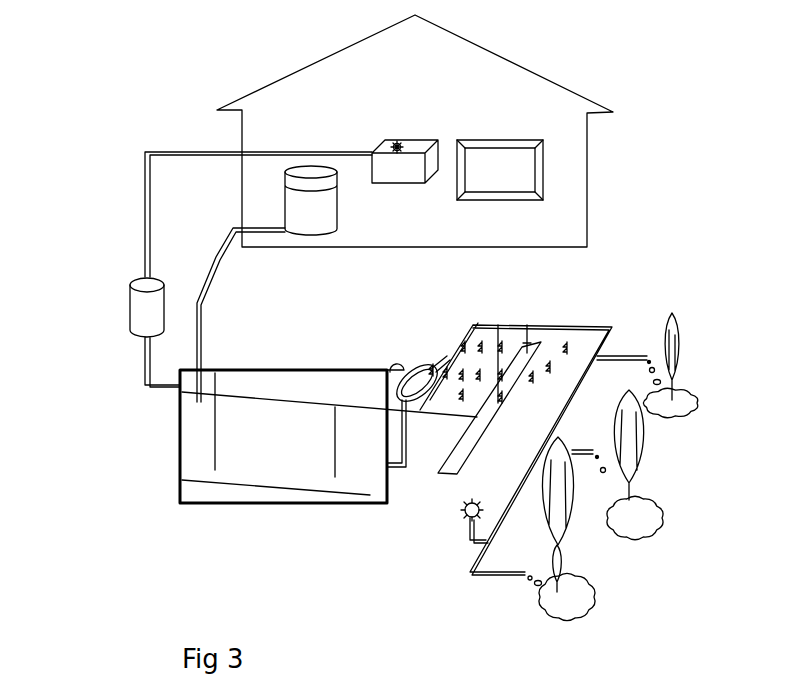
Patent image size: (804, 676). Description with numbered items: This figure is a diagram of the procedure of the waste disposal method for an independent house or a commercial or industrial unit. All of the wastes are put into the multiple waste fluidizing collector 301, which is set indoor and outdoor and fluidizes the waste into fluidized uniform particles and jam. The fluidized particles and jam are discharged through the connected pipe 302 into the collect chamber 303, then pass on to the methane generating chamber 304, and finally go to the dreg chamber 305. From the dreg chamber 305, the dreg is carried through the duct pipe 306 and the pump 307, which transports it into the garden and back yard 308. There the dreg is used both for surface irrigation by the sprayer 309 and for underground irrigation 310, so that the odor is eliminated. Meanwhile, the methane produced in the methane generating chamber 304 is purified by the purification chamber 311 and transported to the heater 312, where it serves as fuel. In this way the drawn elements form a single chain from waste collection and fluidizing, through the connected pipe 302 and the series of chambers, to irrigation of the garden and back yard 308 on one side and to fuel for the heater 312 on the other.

The multiple waste fluidizing collector 301 is at (320, 223).
The connected pipe 302 is at (217, 258).
The collect chamber 303 is at (197, 415).
The methane generating chamber 304 is at (300, 462).
The dreg chamber 305 is at (370, 495).
The duct pipe 306 is at (585, 323).
The pump 307 is at (390, 367).
The garden and back yard 308 is at (620, 480).
The sprayer 309 is at (540, 590).
The underground irrigation 310 is at (210, 387).
The purification chamber 311 is at (130, 285).
The heater 312 is at (373, 152).